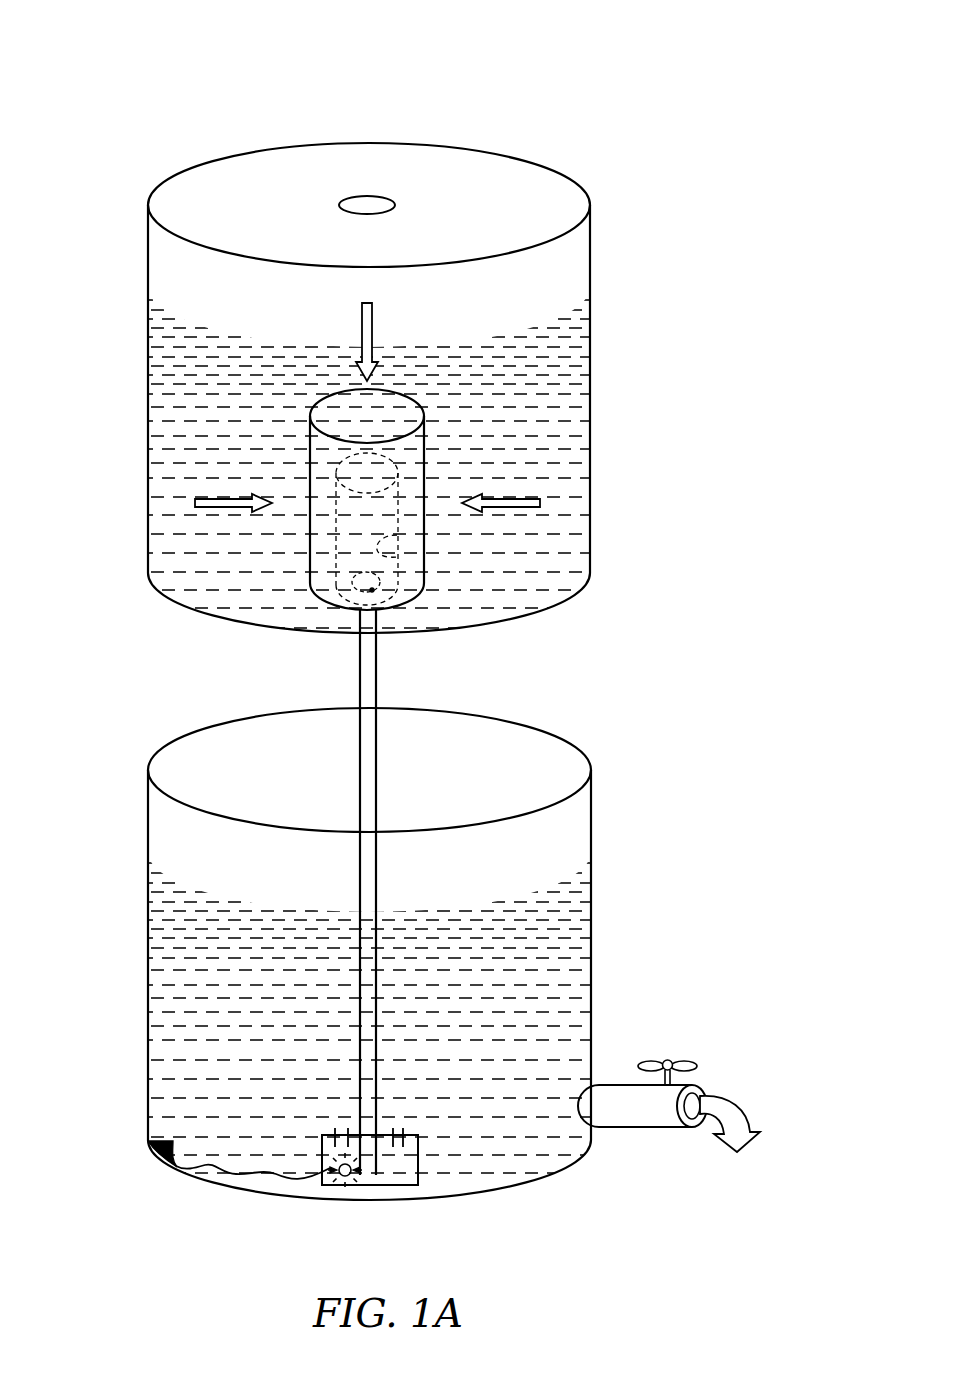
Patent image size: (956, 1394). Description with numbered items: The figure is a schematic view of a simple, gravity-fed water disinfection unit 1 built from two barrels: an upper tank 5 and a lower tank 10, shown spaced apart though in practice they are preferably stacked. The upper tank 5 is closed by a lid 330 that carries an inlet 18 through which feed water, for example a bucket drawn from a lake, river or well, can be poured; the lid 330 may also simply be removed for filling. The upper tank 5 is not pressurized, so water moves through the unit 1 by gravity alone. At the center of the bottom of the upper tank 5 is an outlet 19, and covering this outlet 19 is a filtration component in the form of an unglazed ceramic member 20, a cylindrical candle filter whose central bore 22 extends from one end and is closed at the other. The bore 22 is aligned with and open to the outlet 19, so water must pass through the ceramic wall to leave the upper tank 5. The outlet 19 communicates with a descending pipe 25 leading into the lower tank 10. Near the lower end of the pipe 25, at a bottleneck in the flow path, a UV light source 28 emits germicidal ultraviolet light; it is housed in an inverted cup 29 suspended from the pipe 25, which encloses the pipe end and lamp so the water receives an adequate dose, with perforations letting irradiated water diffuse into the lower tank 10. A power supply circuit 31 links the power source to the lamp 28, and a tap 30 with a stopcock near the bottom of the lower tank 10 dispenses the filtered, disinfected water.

The water disinfection unit 1 is at (557, 101).
The upper tank 5 is at (593, 285).
The lid 330 is at (258, 176).
The inlet 18 is at (373, 196).
The ceramic member 20 is at (425, 444).
The central bore 22 is at (397, 557).
The outlet 19 is at (375, 578).
The pipe 25 is at (378, 668).
The lower tank 10 is at (594, 819).
The tap 30 is at (622, 1083).
The power supply circuit 31 is at (150, 1146).
The inverted cup 29 is at (418, 1160).
The UV light source 28 is at (352, 1170).